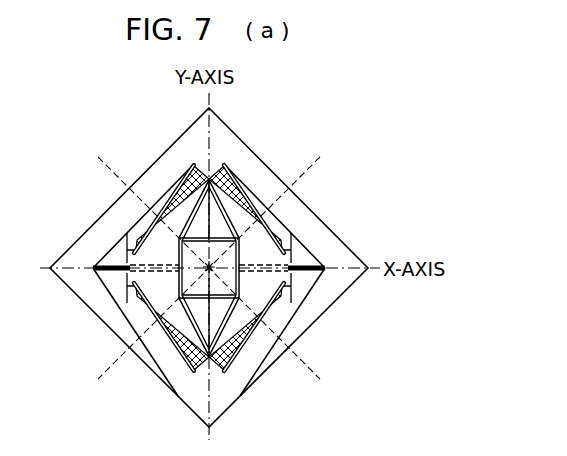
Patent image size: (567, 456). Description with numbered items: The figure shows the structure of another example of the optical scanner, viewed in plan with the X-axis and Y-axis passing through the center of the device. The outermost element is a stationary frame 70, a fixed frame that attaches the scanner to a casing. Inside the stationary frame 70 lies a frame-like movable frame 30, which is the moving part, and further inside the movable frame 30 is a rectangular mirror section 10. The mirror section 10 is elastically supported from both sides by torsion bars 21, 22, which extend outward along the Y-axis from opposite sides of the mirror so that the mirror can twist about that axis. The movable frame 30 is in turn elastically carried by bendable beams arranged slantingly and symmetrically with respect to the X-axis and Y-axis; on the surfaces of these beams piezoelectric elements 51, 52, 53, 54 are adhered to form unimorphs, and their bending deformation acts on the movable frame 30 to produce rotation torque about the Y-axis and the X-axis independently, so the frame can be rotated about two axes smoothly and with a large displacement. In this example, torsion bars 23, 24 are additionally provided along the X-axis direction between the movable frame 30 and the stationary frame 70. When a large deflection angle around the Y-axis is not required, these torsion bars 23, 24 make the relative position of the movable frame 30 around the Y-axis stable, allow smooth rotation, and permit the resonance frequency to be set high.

The mirror section 10 is at (258, 186).
The torsion bar 21 is at (175, 180).
The torsion bar 22 is at (240, 350).
The torsion bar 23 is at (113, 266).
The torsion bar 24 is at (308, 274).
The movable frame 30 is at (301, 202).
The piezoelectric element 51 is at (143, 213).
The piezoelectric element 52 is at (133, 317).
The piezoelectric element 53 is at (228, 165).
The piezoelectric element 54 is at (279, 324).
The stationary frame 70 is at (307, 228).